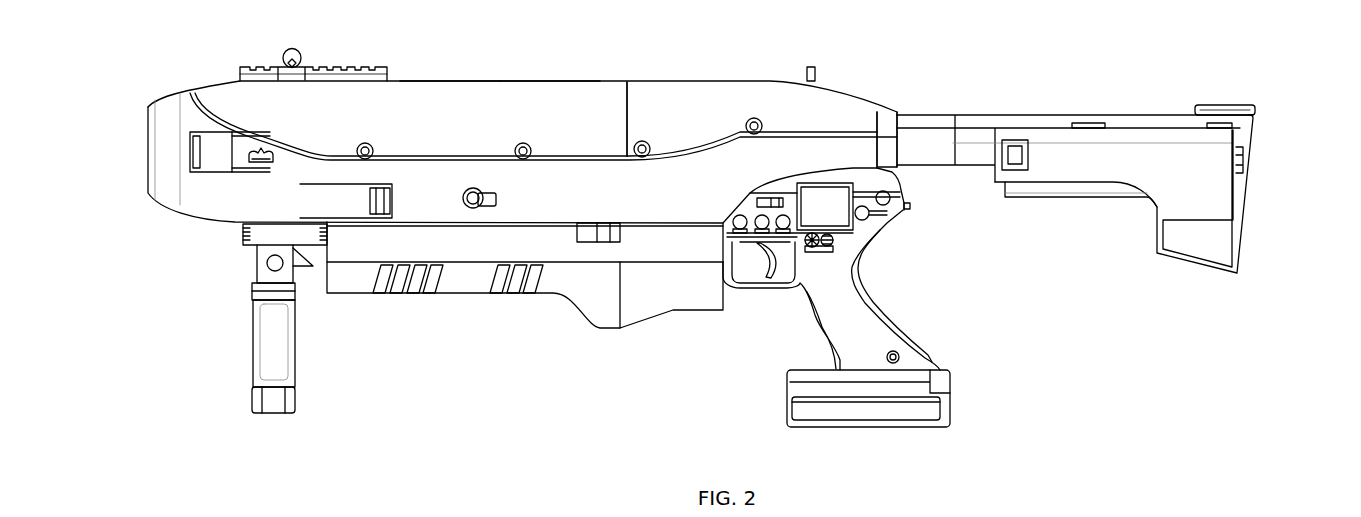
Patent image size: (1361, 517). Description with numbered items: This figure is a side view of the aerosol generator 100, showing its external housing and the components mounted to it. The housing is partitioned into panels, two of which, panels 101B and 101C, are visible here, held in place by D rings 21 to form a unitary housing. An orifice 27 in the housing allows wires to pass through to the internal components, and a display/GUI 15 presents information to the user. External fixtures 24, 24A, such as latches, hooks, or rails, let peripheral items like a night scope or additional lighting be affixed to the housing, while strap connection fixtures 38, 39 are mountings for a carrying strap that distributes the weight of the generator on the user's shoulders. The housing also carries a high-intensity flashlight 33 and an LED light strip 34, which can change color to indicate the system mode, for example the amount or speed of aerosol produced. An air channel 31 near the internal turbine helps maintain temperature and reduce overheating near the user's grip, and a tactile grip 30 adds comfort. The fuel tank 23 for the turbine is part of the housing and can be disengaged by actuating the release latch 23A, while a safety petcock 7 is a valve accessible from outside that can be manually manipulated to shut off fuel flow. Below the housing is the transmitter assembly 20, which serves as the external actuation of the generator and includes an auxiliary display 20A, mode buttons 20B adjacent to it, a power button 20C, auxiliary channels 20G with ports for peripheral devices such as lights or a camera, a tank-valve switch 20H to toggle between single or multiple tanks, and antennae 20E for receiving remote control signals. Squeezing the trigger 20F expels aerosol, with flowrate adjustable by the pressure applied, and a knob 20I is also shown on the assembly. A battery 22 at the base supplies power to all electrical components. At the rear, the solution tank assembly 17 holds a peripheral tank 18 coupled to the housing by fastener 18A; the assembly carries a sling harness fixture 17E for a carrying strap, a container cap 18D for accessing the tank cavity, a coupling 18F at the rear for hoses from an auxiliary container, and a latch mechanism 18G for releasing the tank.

The aerosol generator 100 is at (150, 80).
The display/GUI 15 is at (743, 80).
The housing panel 101B is at (547, 80).
The housing panel 101C is at (833, 85).
The orifice 27 is at (450, 80).
The D ring 21 is at (645, 142).
The LED light strip 34 is at (853, 130).
The external fixture 24 is at (240, 66).
The strap connection fixture 39 is at (302, 60).
The flashlight 33 is at (205, 155).
The strap connection fixture 38 is at (250, 157).
The air channel 31 is at (345, 210).
The safety petcock 7 is at (470, 212).
The external fixture 24A is at (243, 240).
The tactile grip 30 is at (250, 331).
The fuel tank 23 is at (468, 295).
The release latch 23A is at (612, 243).
The transmitter assembly 20 is at (917, 343).
The auxiliary display 20A is at (870, 235).
The tank-valve switch 20H is at (755, 202).
The mode buttons 20B is at (870, 218).
The power button 20C is at (891, 197).
The antennae 20E is at (911, 206).
The auxiliary channels 20G is at (752, 250).
The trigger 20F is at (810, 250).
The adjustment knob 20I is at (826, 248).
The battery 22 is at (955, 406).
The solution tank assembly 17 is at (985, 113).
The sling harness fixture 17E is at (1230, 105).
The peripheral tank 18 is at (1157, 128).
The container cap 18D is at (1090, 121).
The latch mechanism 18G is at (1232, 124).
The coupling 18F is at (1248, 160).
The fastener 18A is at (1015, 163).